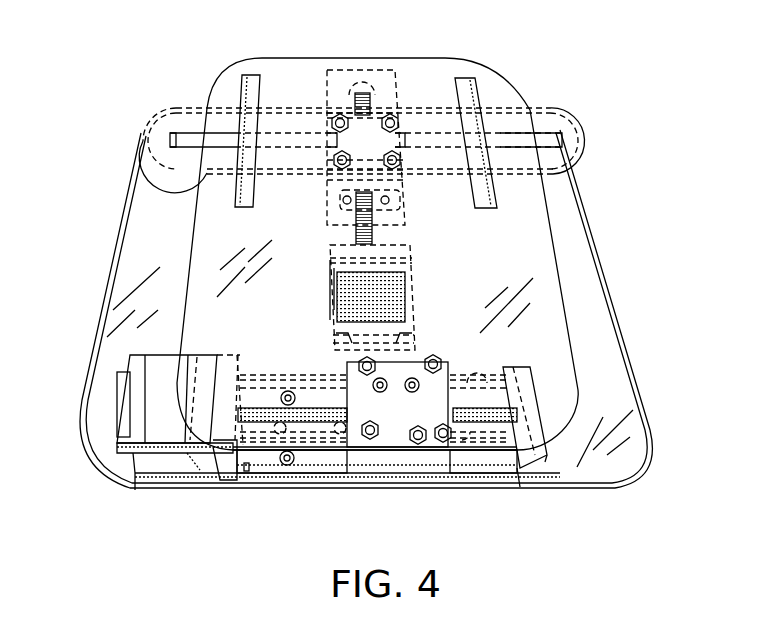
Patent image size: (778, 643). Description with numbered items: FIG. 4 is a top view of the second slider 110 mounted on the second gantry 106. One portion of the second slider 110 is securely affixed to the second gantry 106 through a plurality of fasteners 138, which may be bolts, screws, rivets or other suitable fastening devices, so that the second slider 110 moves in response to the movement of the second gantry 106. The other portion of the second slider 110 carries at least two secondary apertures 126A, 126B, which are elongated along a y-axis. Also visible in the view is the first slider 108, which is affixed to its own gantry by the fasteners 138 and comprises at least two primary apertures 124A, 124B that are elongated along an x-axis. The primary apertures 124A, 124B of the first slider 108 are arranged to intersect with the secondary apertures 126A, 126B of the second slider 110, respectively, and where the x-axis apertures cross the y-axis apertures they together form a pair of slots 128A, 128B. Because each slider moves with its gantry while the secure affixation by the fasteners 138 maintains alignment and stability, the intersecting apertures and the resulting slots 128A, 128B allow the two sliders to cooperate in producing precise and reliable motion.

The second gantry 106 is at (393, 465).
The first slider 108 is at (158, 143).
The second slider 110 is at (563, 420).
The primary aperture 124A is at (287, 137).
The primary aperture 124B is at (427, 133).
The secondary aperture 126A is at (247, 75).
The secondary aperture 126B is at (463, 78).
The slot 128A is at (240, 143).
The slot 128B is at (467, 140).
The fasteners 138 is at (448, 450).